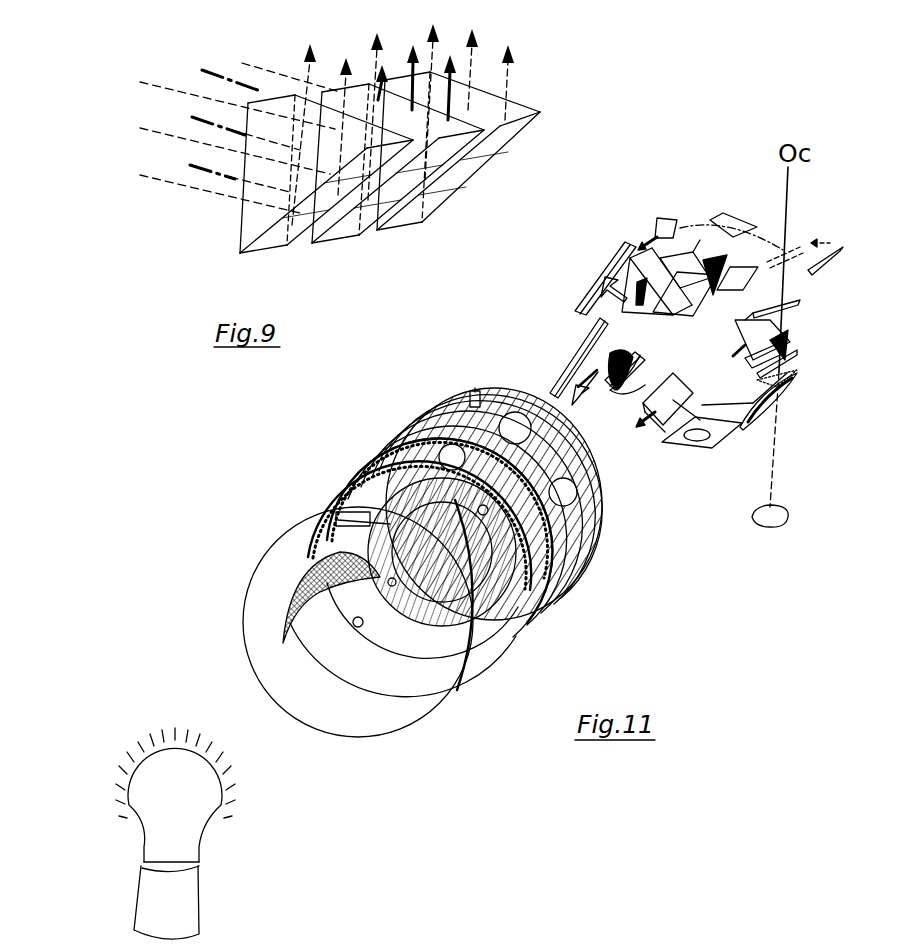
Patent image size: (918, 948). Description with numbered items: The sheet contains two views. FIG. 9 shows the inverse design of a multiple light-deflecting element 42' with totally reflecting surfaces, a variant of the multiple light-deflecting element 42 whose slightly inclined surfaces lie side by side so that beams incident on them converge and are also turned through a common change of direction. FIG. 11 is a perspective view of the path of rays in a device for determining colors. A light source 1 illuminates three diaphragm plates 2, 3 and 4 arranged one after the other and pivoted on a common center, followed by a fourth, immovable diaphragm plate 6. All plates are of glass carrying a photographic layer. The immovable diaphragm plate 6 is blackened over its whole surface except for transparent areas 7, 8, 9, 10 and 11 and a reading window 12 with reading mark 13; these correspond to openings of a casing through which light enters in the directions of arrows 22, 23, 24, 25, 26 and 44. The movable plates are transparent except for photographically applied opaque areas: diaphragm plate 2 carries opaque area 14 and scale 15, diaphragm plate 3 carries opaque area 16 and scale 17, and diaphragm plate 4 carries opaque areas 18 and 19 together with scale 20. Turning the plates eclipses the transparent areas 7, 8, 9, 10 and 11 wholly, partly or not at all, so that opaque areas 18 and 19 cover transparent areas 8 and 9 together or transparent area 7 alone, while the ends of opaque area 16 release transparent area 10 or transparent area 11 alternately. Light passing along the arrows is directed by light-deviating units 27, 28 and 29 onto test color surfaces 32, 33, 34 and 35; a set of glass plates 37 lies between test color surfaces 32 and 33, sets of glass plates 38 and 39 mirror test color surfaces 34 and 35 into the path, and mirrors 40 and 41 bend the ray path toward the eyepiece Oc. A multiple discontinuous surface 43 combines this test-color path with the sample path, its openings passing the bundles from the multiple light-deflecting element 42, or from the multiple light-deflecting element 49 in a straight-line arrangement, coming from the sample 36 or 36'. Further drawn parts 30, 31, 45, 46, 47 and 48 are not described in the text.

In FIG. 9, the prism array 42' is at (340, 165).
In FIG. 11, the light source 1 is at (168, 768).
In FIG. 11, the diaphragm plate 2 is at (363, 730).
In FIG. 11, the diaphragm plate 3 is at (475, 672).
In FIG. 11, the diaphragm plate 4 is at (508, 640).
In FIG. 11, the immovable diaphragm plate 6 is at (600, 553).
In FIG. 11, the transparent area 7 is at (522, 628).
In FIG. 11, the transparent area 8 is at (533, 617).
In FIG. 11, the transparent area 9 is at (563, 600).
In FIG. 11, the transparent area 10 is at (577, 587).
In FIG. 11, the transparent area 11 is at (597, 573).
In FIG. 11, the reading window 12 is at (473, 402).
In FIG. 11, the reading mark 13 is at (474, 390).
In FIG. 11, the opaque area 14 is at (284, 598).
In FIG. 11, the scale 15 is at (340, 517).
In FIG. 11, the opaque area 16 is at (337, 520).
In FIG. 11, the scale 17 is at (350, 494).
In FIG. 11, the opaque area 18 is at (372, 488).
In FIG. 11, the opaque area 19 is at (370, 465).
In FIG. 11, the scale 20 is at (390, 446).
In FIG. 11, the arrow 22 is at (585, 390).
In FIG. 11, the arrow 23 is at (605, 310).
In FIG. 11, the arrow 24 is at (690, 312).
In FIG. 11, the arrow 25 is at (745, 360).
In FIG. 11, the arrow 26 is at (645, 428).
In FIG. 11, the light-deviating unit 27 is at (618, 390).
In FIG. 11, the light-deviating unit 28 is at (640, 275).
In FIG. 11, the light-deviating unit 29 is at (705, 255).
In FIG. 11, the prism 30 is at (780, 335).
In FIG. 11, the prism block 31 is at (663, 443).
In FIG. 11, the test color surface 32 is at (552, 380).
In FIG. 11, the test color surface 33 is at (580, 283).
In FIG. 11, the test color surface 34 is at (700, 240).
In FIG. 11, the test color surface 35 is at (795, 352).
In FIG. 11, the sample color 36 is at (698, 464).
In FIG. 11, the sample 36' is at (738, 520).
In FIG. 11, the set of glass plates 37 is at (630, 395).
In FIG. 11, the set of glass plates 38 is at (640, 280).
In FIG. 11, the set of glass plates 39 is at (800, 370).
In FIG. 11, the mirror 40 is at (748, 283).
In FIG. 11, the mirror 41 is at (730, 425).
In FIG. 11, the multiple light-deflecting element 42 is at (750, 417).
In FIG. 11, the multiple discontinuous surface 43 is at (795, 305).
In FIG. 11, the arrow 44 is at (648, 240).
In FIG. 11, the block 45 is at (668, 220).
In FIG. 11, the plate 46 is at (748, 225).
In FIG. 11, the pointer 47 is at (842, 250).
In FIG. 11, the optical axis 48 is at (730, 427).
In FIG. 11, the multiple light-deflecting element 49 is at (800, 380).